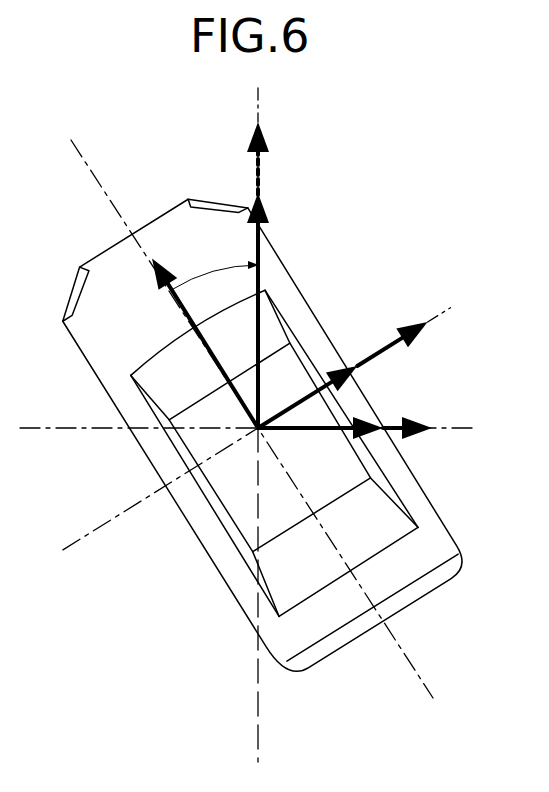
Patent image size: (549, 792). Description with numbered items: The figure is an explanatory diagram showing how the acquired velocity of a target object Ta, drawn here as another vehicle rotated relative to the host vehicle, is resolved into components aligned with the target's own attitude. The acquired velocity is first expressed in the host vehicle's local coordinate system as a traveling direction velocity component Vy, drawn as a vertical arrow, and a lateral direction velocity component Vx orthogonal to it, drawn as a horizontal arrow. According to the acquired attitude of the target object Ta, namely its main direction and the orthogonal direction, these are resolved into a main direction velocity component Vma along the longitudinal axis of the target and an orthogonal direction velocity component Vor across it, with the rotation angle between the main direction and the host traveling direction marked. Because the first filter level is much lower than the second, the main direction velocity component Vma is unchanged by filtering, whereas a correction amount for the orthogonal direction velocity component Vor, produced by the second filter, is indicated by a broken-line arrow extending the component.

The target object Ta is at (448, 519).
The main direction velocity component Vma is at (175, 313).
The traveling direction velocity component Vy is at (256, 250).
The lateral direction velocity component Vx is at (327, 433).
The orthogonal direction velocity component Vor is at (313, 390).